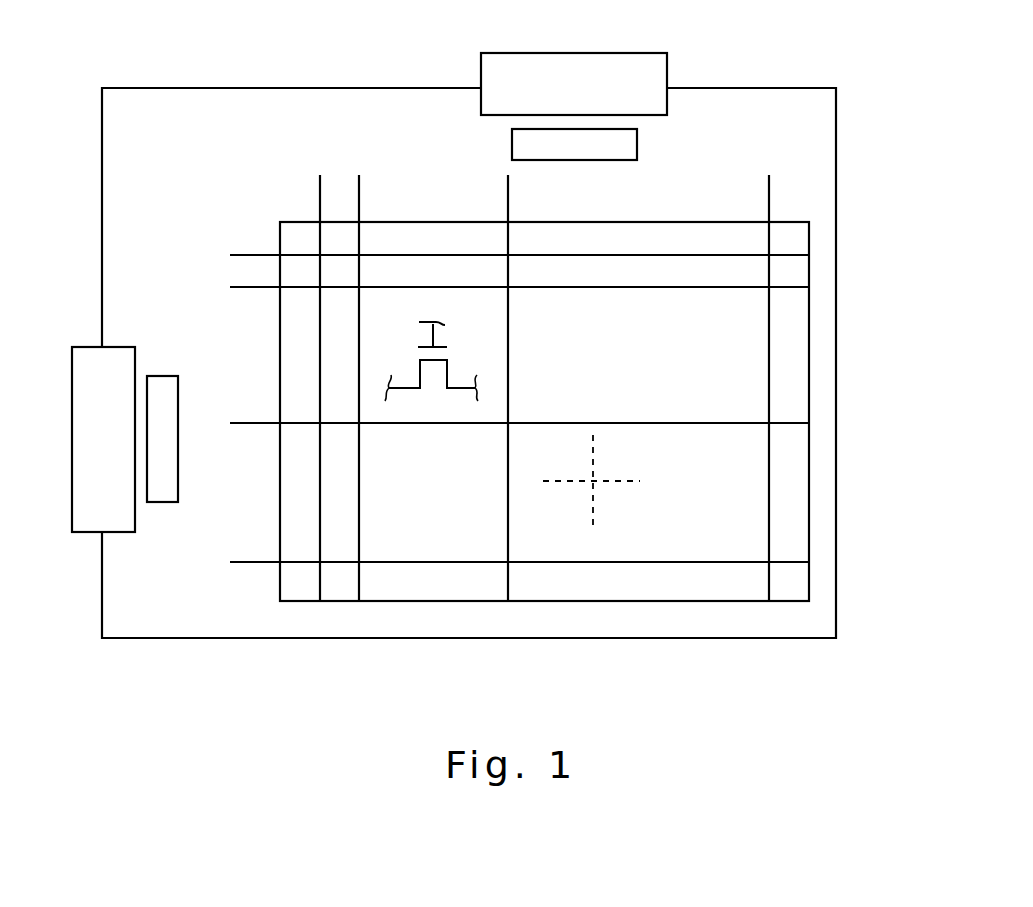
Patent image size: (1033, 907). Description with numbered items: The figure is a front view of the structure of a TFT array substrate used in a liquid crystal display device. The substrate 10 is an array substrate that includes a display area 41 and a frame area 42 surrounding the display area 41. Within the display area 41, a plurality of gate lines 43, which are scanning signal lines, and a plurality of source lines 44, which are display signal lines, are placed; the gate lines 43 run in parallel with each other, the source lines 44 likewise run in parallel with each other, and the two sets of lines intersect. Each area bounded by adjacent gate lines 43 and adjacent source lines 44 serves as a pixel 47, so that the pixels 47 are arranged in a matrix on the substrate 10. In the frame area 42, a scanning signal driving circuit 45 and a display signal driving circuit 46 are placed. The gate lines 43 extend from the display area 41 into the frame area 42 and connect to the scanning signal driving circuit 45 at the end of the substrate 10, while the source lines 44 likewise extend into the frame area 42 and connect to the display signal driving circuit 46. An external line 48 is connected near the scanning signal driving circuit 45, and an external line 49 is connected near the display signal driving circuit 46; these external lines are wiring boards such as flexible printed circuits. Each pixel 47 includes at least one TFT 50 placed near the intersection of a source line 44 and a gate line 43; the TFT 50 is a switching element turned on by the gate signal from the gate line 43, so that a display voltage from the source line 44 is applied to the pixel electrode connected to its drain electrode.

The substrate 10 is at (836, 127).
The display area 41 is at (809, 237).
The frame area 42 is at (781, 116).
The gate line 43 is at (241, 255).
The source line 44 is at (359, 187).
The scanning signal driving circuit 45 is at (159, 376).
The display signal driving circuit 46 is at (637, 138).
The pixel 47 is at (333, 272).
The external line 48 is at (81, 347).
The external line 49 is at (667, 67).
The TFT 50 is at (462, 354).